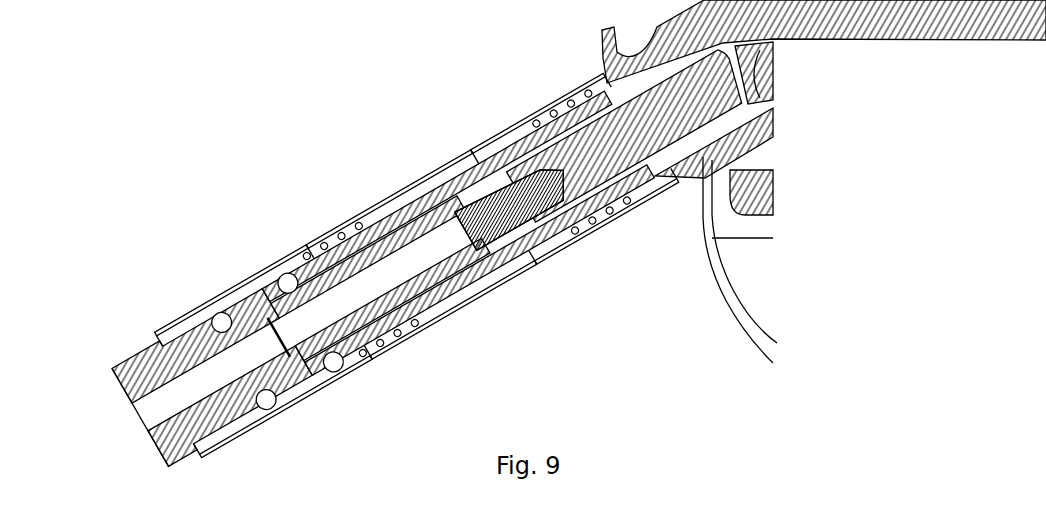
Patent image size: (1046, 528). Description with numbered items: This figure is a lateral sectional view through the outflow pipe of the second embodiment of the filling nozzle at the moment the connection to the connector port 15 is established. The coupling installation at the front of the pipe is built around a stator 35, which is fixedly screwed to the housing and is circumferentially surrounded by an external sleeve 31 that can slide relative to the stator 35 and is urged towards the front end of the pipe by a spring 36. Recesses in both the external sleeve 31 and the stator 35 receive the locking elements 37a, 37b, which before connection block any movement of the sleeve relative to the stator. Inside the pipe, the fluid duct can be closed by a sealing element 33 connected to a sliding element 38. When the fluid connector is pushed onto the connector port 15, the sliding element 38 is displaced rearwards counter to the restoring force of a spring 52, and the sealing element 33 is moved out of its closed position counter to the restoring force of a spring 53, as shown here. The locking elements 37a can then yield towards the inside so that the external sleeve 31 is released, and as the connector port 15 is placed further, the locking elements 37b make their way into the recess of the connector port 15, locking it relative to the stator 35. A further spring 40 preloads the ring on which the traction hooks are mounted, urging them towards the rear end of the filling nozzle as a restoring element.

The connector port 15 is at (160, 372).
The external sleeve 31 is at (230, 294).
The sealing element 33 is at (448, 190).
The stator 35 is at (323, 262).
The spring 36 is at (362, 212).
The locking elements 37a is at (333, 372).
The locking elements 37b is at (267, 392).
The sliding element 38 is at (375, 366).
The spring 40 is at (537, 118).
The spring 52 is at (403, 350).
The spring 53 is at (560, 250).